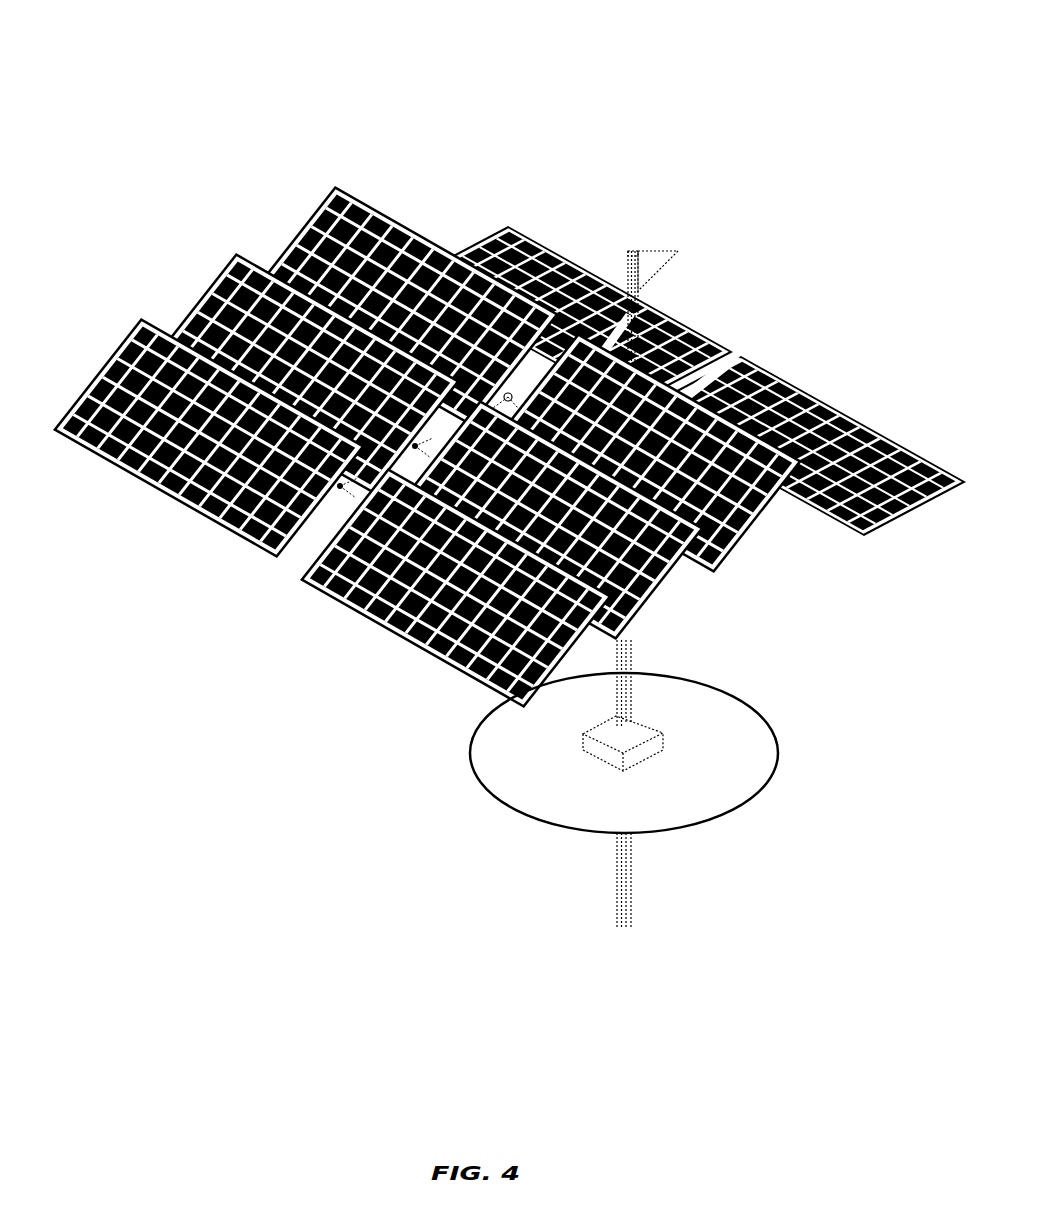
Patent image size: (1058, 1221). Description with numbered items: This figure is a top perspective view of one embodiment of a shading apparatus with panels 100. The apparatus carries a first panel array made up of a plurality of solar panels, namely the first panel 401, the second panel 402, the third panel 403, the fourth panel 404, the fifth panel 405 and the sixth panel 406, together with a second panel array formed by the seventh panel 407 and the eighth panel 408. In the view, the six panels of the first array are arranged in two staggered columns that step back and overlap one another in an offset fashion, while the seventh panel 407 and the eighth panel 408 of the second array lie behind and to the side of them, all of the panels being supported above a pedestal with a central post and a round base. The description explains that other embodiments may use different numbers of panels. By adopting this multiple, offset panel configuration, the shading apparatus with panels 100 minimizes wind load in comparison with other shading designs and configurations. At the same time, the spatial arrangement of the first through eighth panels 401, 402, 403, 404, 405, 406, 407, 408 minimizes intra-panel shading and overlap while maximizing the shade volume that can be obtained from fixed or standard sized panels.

The shading apparatus with panels 100 is at (668, 60).
The first panel 401 is at (325, 192).
The second panel 402 is at (743, 458).
The third panel 403 is at (220, 272).
The fourth panel 404 is at (650, 533).
The fifth panel 405 is at (85, 358).
The sixth panel 406 is at (322, 567).
The seventh panel 407 is at (507, 265).
The eighth panel 408 is at (870, 458).